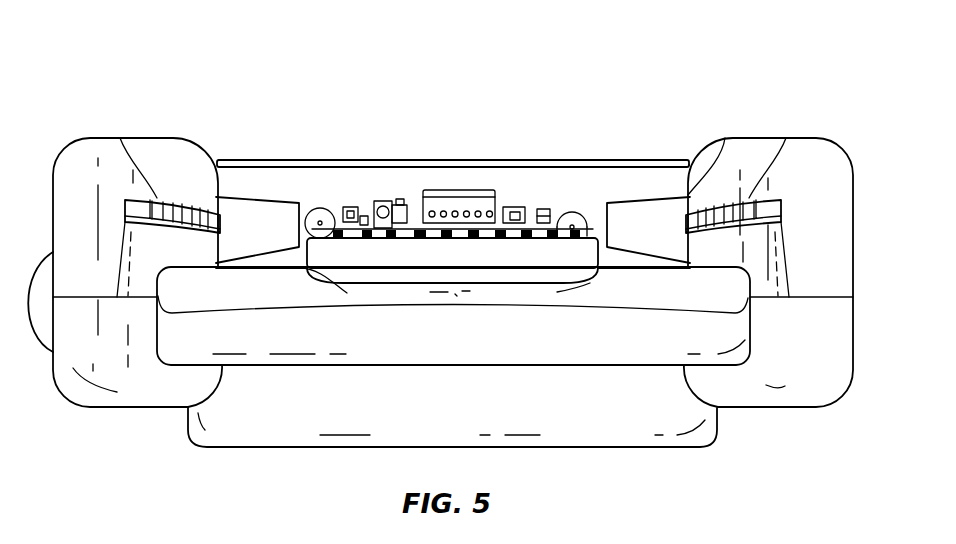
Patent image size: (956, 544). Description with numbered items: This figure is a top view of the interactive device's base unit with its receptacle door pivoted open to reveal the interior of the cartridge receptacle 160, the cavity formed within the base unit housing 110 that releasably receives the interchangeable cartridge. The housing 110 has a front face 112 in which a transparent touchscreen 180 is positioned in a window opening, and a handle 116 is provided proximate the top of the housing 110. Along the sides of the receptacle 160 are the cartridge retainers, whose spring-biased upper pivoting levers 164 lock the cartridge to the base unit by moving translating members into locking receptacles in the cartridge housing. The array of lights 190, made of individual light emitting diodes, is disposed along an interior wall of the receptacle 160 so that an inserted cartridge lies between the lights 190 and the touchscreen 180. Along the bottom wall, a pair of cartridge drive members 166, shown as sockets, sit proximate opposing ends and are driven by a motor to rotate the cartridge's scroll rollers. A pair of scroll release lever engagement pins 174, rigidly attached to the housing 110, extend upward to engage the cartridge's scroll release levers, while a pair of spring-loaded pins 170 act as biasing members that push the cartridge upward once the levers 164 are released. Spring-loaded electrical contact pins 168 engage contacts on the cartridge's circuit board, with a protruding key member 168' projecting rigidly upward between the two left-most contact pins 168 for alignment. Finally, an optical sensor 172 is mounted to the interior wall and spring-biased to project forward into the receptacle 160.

The base unit housing 110 is at (841, 283).
The front face 112 is at (245, 160).
The handle 116 is at (455, 297).
The cartridge receptacle 160 is at (725, 139).
The upper pivoting lever 164 is at (122, 139).
The cartridge drive members 166 is at (315, 208).
The spring-loaded electrical contact pins 168 is at (472, 161).
The key member 168' is at (456, 110).
The spring-loaded pins 170 is at (385, 200).
The optical sensor 172 is at (403, 205).
The scroll release lever engagement pins 174 is at (352, 207).
The touchscreen 180 is at (642, 162).
The array of lights 190 is at (474, 263).